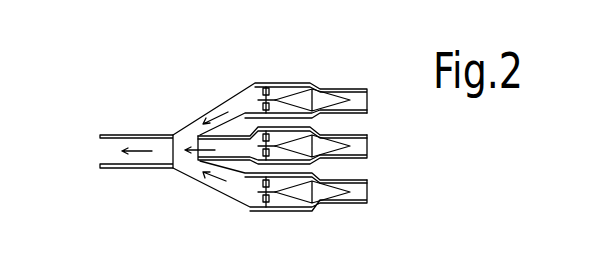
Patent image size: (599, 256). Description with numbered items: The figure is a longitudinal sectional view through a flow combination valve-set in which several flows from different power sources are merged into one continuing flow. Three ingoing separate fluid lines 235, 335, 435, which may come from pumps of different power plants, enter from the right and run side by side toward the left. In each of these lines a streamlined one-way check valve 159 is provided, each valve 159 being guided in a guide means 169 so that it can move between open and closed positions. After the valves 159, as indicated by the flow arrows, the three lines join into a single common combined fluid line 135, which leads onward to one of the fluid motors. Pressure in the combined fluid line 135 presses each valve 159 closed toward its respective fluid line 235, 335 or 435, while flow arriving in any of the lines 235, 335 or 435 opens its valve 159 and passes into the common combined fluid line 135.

The combined fluid line 135 is at (148, 166).
The one-way check valve 159 is at (300, 98).
The guide means 169 is at (265, 84).
The fluid line 235 is at (353, 92).
The fluid line 335 is at (358, 143).
The fluid line 435 is at (363, 184).